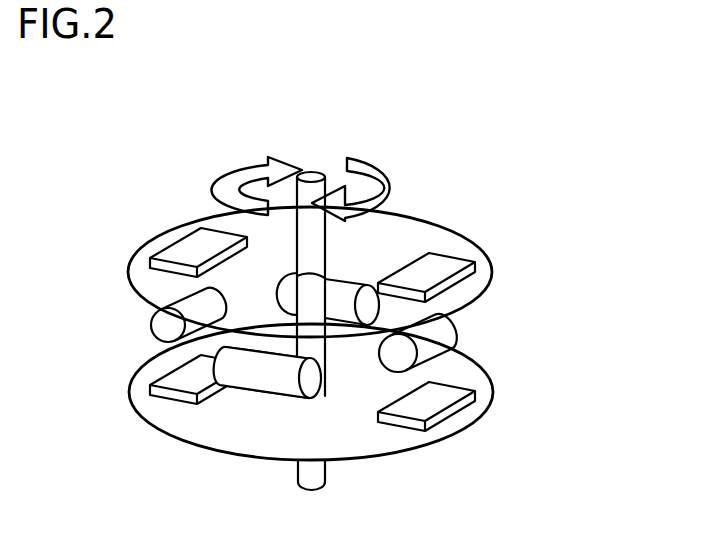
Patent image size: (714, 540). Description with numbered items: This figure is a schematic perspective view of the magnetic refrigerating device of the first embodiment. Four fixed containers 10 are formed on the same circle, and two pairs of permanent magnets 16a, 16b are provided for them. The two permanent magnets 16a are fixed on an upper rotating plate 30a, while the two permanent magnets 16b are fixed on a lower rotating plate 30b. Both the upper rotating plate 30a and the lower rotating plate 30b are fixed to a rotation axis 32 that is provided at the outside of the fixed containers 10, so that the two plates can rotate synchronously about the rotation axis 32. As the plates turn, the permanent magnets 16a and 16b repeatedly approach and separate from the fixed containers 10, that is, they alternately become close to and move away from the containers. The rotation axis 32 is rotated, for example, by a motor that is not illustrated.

The fixed container 10 is at (453, 332).
The permanent magnet 16a is at (464, 263).
The permanent magnet 16b is at (464, 389).
The upper rotating plate 30a is at (130, 268).
The lower rotating plate 30b is at (131, 392).
The rotation axis 32 is at (309, 173).